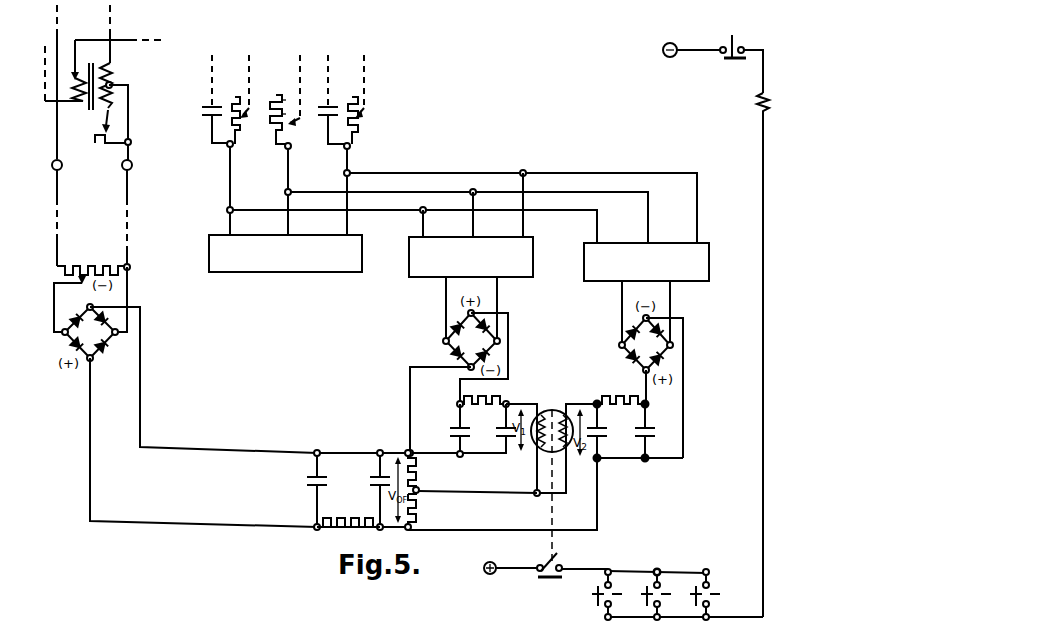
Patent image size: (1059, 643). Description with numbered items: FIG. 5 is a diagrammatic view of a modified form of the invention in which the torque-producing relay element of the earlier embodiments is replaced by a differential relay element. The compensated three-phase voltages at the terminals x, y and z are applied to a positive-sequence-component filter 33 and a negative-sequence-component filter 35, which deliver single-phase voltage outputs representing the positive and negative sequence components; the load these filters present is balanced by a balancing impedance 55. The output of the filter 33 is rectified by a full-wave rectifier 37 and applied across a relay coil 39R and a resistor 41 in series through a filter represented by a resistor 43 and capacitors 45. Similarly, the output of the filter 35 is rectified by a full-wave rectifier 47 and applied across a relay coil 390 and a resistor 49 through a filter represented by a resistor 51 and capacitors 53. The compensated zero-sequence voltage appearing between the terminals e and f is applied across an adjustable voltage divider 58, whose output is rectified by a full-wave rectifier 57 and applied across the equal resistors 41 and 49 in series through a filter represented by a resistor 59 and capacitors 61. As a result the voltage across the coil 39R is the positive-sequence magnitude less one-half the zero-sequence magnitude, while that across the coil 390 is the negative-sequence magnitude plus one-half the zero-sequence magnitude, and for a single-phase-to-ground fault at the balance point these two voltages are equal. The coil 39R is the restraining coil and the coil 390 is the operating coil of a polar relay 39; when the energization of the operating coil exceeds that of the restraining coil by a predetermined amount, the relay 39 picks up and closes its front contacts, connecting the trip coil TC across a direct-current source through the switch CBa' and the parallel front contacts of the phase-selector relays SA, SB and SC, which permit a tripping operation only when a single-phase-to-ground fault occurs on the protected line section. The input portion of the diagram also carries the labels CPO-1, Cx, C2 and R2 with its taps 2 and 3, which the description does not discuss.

The adjustable voltage divider 58 is at (112, 263).
The full-wave rectifier 57 is at (98, 332).
The balancing impedance 55 is at (278, 274).
The positive-sequence-component filter 33 is at (434, 279).
The negative-sequence-component filter 35 is at (612, 283).
The rectifier bridge 37 is at (461, 340).
The full-wave rectifier 47 is at (633, 344).
The resistor 43 is at (490, 398).
The capacitors 45 is at (497, 432).
The relay coil 39R is at (551, 443).
The relay coil 390 is at (557, 410).
The resistor 51 is at (618, 399).
The capacitors 53 is at (641, 433).
The capacitors 61 is at (368, 483).
The resistor 41 is at (419, 482).
The resistor 49 is at (419, 518).
The resistor 59 is at (360, 532).
The polar relay 39 is at (554, 566).
The resistor tap 2 is at (288, 109).
The resistor tap 3 is at (288, 95).
The resistor R2 is at (278, 105).
The capacitor Cx is at (214, 104).
The capacitor C2 is at (333, 105).
The current transformer CPO-1 is at (104, 101).
The trip coil TC is at (749, 355).
The switch CBa' is at (713, 64).
The phase-selector relay SA is at (594, 594).
The phase-selector relay SB is at (647, 594).
The phase-selector relay SC is at (710, 594).